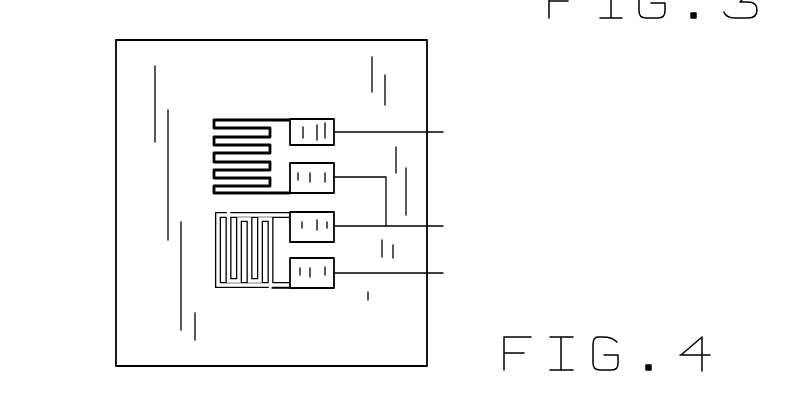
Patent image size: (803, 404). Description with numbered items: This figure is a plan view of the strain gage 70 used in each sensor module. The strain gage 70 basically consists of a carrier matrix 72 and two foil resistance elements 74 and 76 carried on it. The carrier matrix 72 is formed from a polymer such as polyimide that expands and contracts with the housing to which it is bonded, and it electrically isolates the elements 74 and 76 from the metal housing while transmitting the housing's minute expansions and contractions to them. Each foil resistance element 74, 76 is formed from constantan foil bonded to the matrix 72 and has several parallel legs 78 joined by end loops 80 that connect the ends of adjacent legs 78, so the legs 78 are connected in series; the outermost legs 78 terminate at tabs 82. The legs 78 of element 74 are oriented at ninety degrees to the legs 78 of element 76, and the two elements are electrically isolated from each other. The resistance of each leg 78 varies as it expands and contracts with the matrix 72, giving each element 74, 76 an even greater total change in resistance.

The strain gage 70 is at (447, 164).
The carrier matrix 72 is at (142, 57).
The foil resistance element 74 is at (271, 118).
The foil resistance element 76 is at (215, 279).
The legs 78 is at (235, 170).
The end loops 80 is at (226, 147).
The tabs 82 is at (318, 177).